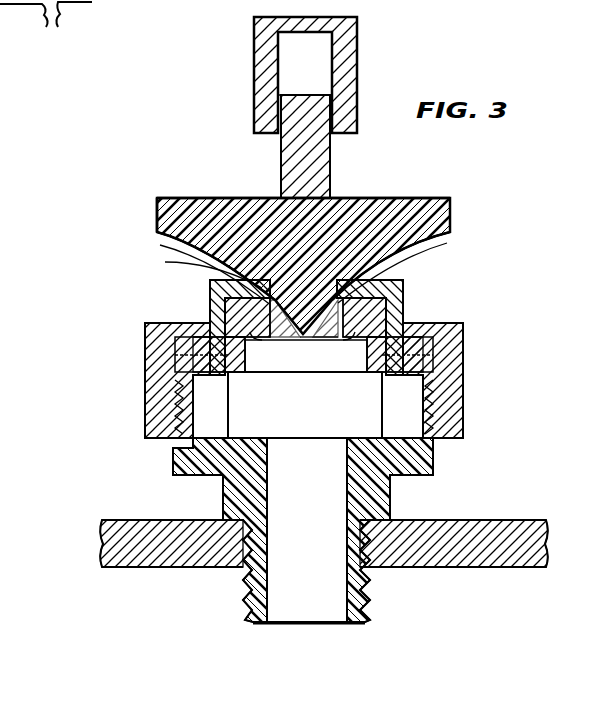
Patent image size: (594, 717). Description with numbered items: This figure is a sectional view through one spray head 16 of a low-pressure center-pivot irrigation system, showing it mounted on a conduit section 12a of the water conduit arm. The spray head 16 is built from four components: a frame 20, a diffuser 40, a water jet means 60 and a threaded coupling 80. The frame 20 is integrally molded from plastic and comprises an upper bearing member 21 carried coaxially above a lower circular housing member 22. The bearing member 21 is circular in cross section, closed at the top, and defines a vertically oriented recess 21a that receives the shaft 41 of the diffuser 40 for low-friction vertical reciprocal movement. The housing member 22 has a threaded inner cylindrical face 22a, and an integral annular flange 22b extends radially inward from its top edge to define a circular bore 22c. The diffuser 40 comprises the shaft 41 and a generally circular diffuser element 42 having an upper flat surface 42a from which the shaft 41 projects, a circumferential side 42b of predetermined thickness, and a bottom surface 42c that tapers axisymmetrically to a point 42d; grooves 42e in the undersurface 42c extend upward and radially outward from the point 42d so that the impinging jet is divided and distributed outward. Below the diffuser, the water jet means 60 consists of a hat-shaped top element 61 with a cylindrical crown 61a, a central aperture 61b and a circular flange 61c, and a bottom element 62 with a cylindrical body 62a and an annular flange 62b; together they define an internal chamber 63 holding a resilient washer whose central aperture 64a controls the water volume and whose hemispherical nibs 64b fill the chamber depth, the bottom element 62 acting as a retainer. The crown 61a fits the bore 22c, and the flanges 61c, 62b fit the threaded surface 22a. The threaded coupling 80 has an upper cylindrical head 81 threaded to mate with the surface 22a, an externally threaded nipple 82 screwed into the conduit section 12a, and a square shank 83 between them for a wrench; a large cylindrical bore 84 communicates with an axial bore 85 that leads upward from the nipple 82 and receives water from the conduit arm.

The conduit section 12a is at (525, 520).
The spray head 16 is at (470, 205).
The frame 20 is at (468, 323).
The upper bearing member 21 is at (258, 85).
The recess 21a is at (292, 68).
The lower circular housing member 22 is at (190, 352).
The threaded surface 22a is at (172, 398).
The annular flange 22b is at (202, 332).
The circular bore 22c is at (408, 315).
The diffuser 40 is at (440, 198).
The shaft 41 is at (292, 158).
The diffuser element 42 is at (366, 212).
The upper flat surface 42a is at (210, 198).
The circumferential side 42b is at (160, 205).
The bottom surface 42c is at (188, 254).
The point 42d is at (322, 340).
The grooves 42e is at (170, 225).
The water jet means 60 is at (293, 316).
The top element 61 is at (405, 300).
The cylindrical crown 61a is at (208, 288).
The central aperture 61b is at (258, 274).
The circular flange 61c is at (195, 334).
The bottom element 62 is at (304, 354).
The cylindrical body 62a is at (258, 372).
The annular flange 62b is at (182, 370).
The internal chamber 63 is at (340, 340).
The central aperture 64a is at (383, 293).
The hemispherical nibs 64b is at (345, 340).
The threaded coupling 80 is at (437, 466).
The upper cylindrical head 81 is at (172, 462).
The externally threaded nipple 82 is at (246, 596).
The square shank 83 is at (222, 500).
The large cylindrical bore 84 is at (282, 443).
The axial bore 85 is at (356, 592).